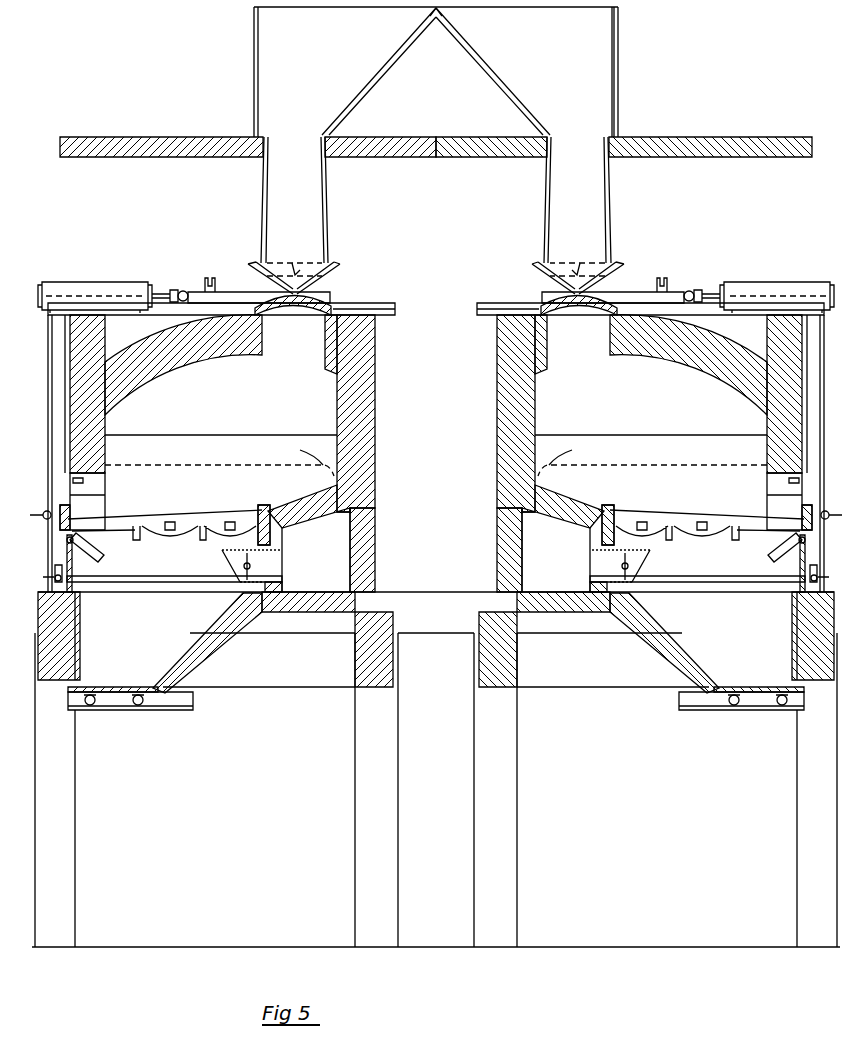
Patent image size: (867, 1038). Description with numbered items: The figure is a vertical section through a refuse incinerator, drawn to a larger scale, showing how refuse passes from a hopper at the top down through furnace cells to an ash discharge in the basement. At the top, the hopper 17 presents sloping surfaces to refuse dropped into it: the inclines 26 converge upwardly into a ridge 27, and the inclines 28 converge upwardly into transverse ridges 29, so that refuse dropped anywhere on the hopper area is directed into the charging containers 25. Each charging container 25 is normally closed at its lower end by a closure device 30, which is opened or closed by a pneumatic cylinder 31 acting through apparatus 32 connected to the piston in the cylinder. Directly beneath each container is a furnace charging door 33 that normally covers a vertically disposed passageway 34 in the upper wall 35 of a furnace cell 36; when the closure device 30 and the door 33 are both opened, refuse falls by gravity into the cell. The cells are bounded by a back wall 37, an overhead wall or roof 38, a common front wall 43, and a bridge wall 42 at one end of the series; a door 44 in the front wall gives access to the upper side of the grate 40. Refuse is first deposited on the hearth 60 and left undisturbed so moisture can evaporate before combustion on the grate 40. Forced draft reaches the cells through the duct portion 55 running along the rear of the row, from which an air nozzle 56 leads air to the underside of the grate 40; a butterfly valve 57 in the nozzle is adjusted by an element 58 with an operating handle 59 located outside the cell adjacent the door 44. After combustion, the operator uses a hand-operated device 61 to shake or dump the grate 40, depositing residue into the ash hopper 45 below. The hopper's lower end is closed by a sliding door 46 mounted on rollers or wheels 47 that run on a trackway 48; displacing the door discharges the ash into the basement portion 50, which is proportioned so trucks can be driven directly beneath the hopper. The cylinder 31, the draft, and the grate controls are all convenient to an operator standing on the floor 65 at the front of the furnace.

The hopper 17 is at (266, 50).
The incline 28 is at (604, 70).
The transverse ridge 29 is at (313, 8).
The incline 26 is at (393, 58).
The ridge 27 is at (435, 17).
The charging container 25 is at (305, 220).
The closure device 30 is at (305, 291).
The pneumatic cylinder 31 is at (110, 288).
The apparatus 32 is at (182, 290).
The furnace charging door 33 is at (310, 302).
The passageway 34 is at (322, 355).
The upper wall 35 is at (187, 357).
The overhead wall or roof 38 is at (130, 383).
The back wall 37 is at (342, 423).
The bridge wall 42 is at (212, 435).
The front wall 43 is at (100, 454).
The furnace cell 36 is at (567, 425).
The grate 40 is at (178, 517).
The hearth 60 is at (312, 500).
The duct portion 55 is at (345, 548).
The air nozzle 56 is at (262, 565).
The butterfly valve 57 is at (232, 550).
The element 58 is at (118, 577).
The door 44 is at (63, 513).
The hand-operated device 61 is at (62, 550).
The operating handle 59 is at (58, 577).
The floor 65 is at (60, 594).
The ash hopper 45 is at (170, 642).
The sliding door 46 is at (137, 687).
The rollers or wheels 47 is at (133, 707).
The trackway 48 is at (194, 702).
The basement portion 50 is at (234, 790).